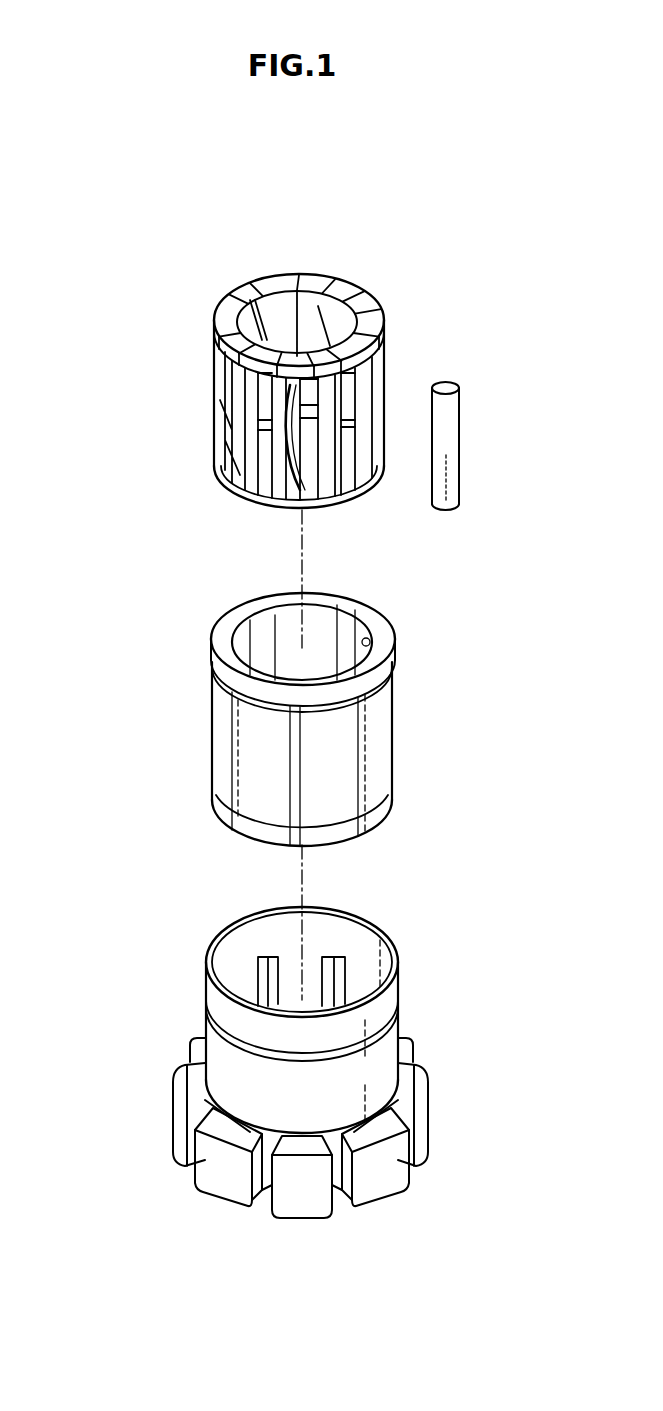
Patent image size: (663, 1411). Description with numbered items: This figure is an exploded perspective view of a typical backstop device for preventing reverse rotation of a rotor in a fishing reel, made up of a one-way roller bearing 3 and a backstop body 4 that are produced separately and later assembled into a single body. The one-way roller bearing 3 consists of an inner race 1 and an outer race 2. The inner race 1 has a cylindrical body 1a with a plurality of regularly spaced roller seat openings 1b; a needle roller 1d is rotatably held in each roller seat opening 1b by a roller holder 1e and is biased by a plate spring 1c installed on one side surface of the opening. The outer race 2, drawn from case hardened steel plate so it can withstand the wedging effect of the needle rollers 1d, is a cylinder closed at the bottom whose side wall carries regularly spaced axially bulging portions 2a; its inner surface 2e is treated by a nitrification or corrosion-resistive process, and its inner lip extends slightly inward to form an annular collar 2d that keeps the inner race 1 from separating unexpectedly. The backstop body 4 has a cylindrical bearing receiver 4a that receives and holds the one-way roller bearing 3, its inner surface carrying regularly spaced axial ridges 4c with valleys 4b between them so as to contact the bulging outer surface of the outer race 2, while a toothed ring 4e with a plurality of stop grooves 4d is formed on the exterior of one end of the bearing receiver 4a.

The inner race 1 is at (193, 344).
The cylindrical body 1a is at (332, 282).
The roller seat openings 1b is at (383, 363).
The plate spring 1c is at (215, 438).
The needle roller 1d is at (459, 421).
The roller holder 1e is at (303, 487).
The outer race 2 is at (198, 696).
The axially bulging portions 2a is at (363, 720).
The annular collar 2d is at (372, 618).
The inner surface 2e is at (372, 645).
The one-way roller bearing 3 is at (100, 638).
The backstop body 4 is at (188, 984).
The bearing receiver 4a is at (400, 1020).
The valleys 4b is at (312, 958).
The ridges 4c is at (270, 958).
The stop grooves 4d is at (340, 1180).
The toothed ring 4e is at (388, 1180).